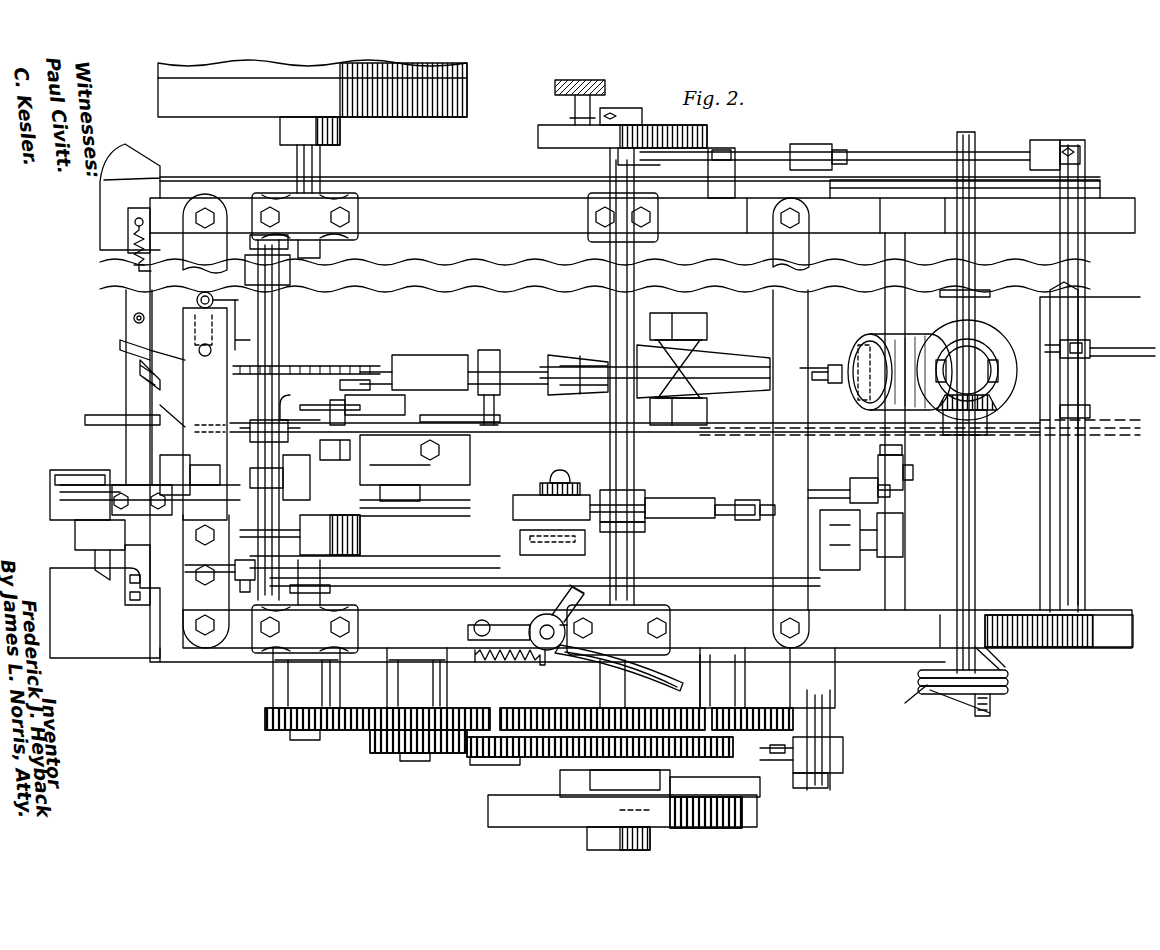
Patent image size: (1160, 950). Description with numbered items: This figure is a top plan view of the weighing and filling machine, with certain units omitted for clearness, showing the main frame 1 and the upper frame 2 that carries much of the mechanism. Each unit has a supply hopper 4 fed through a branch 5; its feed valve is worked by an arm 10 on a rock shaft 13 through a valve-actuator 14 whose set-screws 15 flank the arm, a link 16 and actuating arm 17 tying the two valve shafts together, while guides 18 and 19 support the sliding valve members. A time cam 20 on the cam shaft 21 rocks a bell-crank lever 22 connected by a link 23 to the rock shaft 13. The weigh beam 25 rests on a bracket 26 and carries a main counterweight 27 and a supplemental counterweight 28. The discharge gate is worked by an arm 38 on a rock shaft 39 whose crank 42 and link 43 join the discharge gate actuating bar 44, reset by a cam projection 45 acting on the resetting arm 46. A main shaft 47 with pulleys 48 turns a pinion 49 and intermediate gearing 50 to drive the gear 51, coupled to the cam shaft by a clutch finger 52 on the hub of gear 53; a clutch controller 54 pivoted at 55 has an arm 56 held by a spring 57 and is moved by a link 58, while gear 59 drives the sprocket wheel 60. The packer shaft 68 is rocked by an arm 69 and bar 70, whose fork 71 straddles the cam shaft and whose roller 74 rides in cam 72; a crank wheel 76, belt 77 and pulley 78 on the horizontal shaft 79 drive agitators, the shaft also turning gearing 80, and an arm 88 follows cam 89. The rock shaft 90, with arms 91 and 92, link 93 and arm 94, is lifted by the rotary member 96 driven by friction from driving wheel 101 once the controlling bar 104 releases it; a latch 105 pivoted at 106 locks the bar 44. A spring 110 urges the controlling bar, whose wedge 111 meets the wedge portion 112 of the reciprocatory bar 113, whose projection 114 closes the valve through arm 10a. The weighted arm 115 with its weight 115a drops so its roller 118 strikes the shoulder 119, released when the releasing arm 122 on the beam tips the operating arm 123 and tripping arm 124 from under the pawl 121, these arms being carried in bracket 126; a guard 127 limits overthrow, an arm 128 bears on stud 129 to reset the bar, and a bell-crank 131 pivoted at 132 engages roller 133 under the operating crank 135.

The main frame 1 is at (480, 190).
The upper frame 2 is at (617, 426).
The supply hopper 4 is at (982, 352).
The branch 5 is at (898, 348).
The arm 10 is at (1079, 332).
The arm 10a is at (1096, 399).
The rock shaft 13 is at (1058, 288).
The valve-actuator 14 is at (1088, 185).
The set-screws 15 is at (1083, 337).
The link 16 is at (965, 178).
The actuating arm 17 is at (1015, 389).
The guide 18 is at (828, 398).
The guide 19 is at (1122, 355).
The time cam 20 is at (538, 135).
The cam shaft 21 is at (612, 266).
The bell-crank lever 22 is at (750, 158).
The link 23 is at (993, 160).
The weigh beam 25 is at (708, 372).
The bracket 26 is at (684, 323).
The main counterweight 27 is at (418, 370).
The supplemental counterweight 28 is at (295, 364).
The arm 38 is at (905, 462).
The rock shaft 39 is at (898, 560).
The crank 42 is at (850, 493).
The link 43 is at (760, 500).
The discharge gate actuating bar 44 is at (375, 544).
The cam projection 45 is at (663, 498).
The resetting arm 46 is at (567, 495).
The main shaft 47 is at (320, 170).
The pulleys 48 is at (316, 105).
The pinion 49 is at (265, 720).
The intermediate gearing 50 is at (443, 758).
The gear 51 is at (547, 758).
The clutch finger 52 is at (610, 688).
The gear 53 is at (668, 693).
The clutch controller 54 is at (517, 627).
The pivot 55 is at (547, 617).
The arm 56 is at (625, 642).
The spring 57 is at (505, 662).
The link 58 is at (455, 580).
The gear 59 is at (770, 725).
The sprocket wheel 60 is at (795, 765).
The shaft 68 is at (830, 710).
The arm 69 is at (805, 788).
The bar 70 is at (660, 783).
The fork 71 is at (590, 780).
The cam 72 is at (622, 811).
The roller 74 is at (658, 810).
The crank wheel 76 is at (995, 702).
The belt 77 is at (955, 713).
The pulley 78 is at (910, 705).
The horizontal shaft 79 is at (970, 577).
The gearing 80 is at (993, 404).
The arm 88 is at (520, 545).
The cam 89 is at (645, 532).
The rock shaft 90 is at (256, 246).
The arm 91 is at (235, 580).
The arm 92 is at (283, 465).
The link 93 is at (230, 500).
The arm 94 is at (250, 480).
The rotary member 96 is at (100, 550).
The driving wheel 101 is at (300, 535).
The controlling bar 104 is at (125, 615).
The latch 105 is at (68, 510).
The pivot 106 is at (66, 466).
The spring 110 is at (130, 256).
The wedge 111 is at (138, 378).
The wedge portion 112 is at (145, 425).
The reciprocatory bar 113 is at (548, 432).
The projection 114 is at (922, 423).
The weighted arm 115 is at (464, 493).
The weight 115a is at (460, 495).
The roller 118 is at (430, 465).
The shoulder 119 is at (320, 450).
The pawl 121 is at (332, 400).
The releasing arm 122 is at (494, 402).
The operating arm 123 is at (510, 417).
The tripping arm 124 is at (246, 325).
The bracket 126 is at (340, 388).
The guard 127 is at (370, 375).
The arm 128 is at (260, 418).
The stud 129 is at (340, 376).
The bell-crank 131 is at (150, 352).
The pivot 132 is at (205, 414).
The roller 133 is at (132, 320).
The operating crank 135 is at (242, 299).